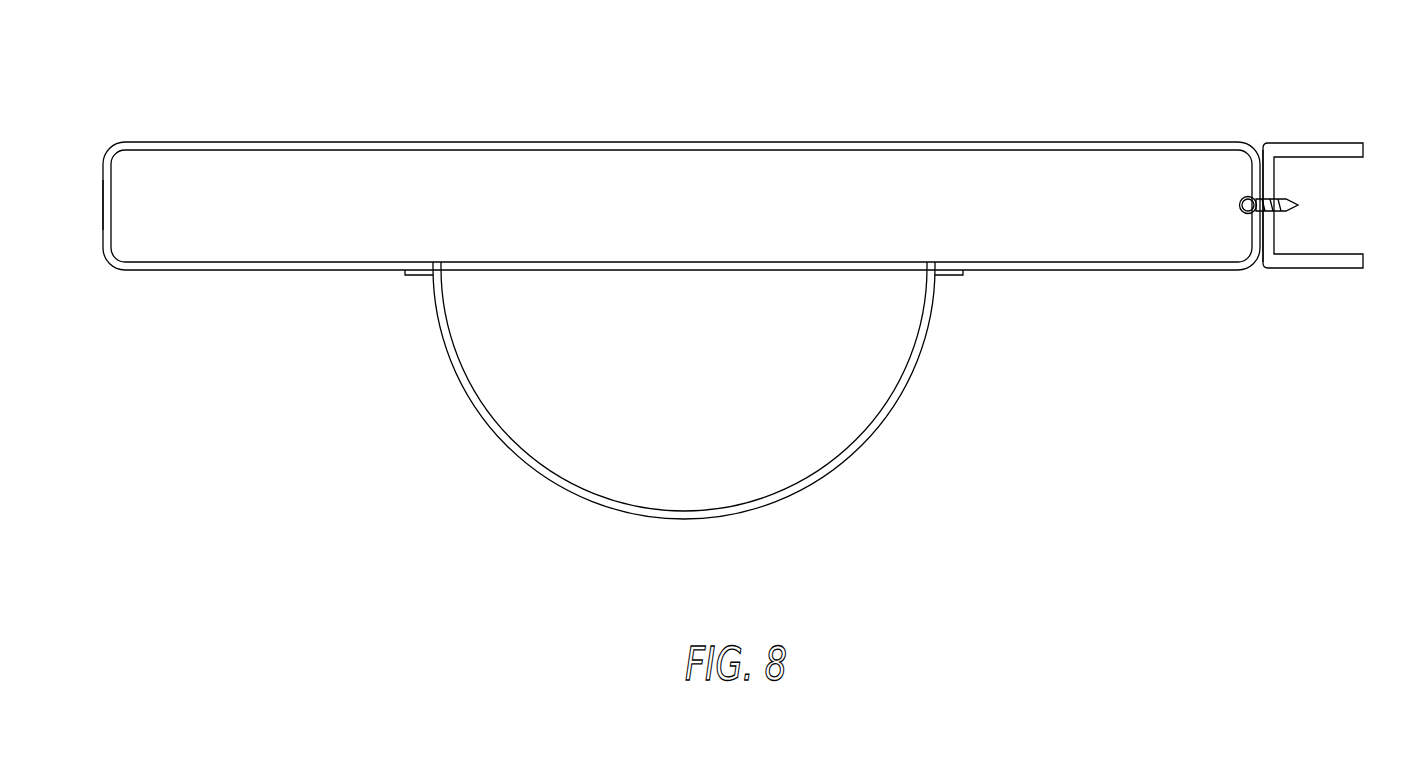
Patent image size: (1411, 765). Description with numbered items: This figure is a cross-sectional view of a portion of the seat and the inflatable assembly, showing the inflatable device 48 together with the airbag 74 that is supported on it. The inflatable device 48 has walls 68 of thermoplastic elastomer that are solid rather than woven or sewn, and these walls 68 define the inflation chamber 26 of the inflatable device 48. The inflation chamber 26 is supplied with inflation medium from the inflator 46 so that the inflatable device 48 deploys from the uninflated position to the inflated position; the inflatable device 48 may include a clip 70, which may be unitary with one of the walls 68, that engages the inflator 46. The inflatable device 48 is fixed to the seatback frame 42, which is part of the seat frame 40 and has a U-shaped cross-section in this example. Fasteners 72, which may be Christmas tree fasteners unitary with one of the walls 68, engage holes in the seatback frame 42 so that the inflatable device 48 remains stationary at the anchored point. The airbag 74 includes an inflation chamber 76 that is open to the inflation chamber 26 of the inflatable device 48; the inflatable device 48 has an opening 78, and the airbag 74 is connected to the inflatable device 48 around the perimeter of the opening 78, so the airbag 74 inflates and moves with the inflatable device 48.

The inflation chamber 26 is at (683, 188).
The seat frame 40 is at (1318, 145).
The seatback frame 42 is at (1287, 143).
The inflator 46 is at (1238, 202).
The inflatable device 48 is at (438, 142).
The walls 68 is at (103, 192).
The clip 70 is at (1243, 214).
The fasteners 72 is at (1298, 208).
The airbag 74 is at (543, 471).
The inflation chamber 76 is at (567, 367).
The opening 78 is at (927, 265).